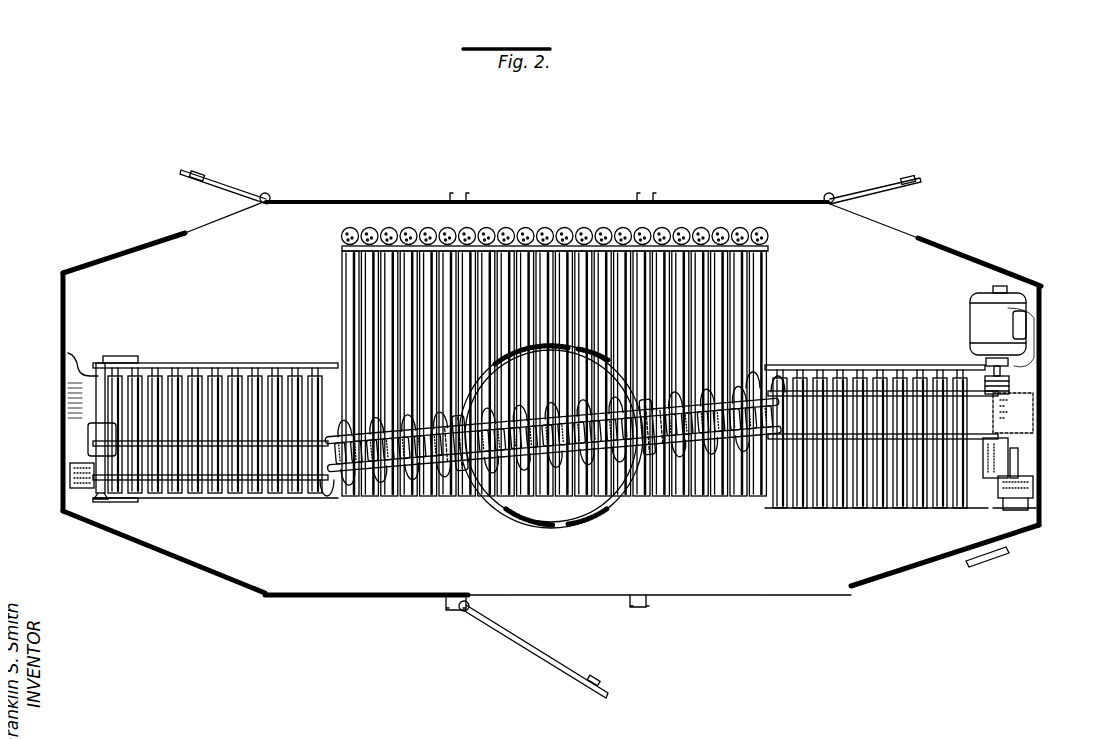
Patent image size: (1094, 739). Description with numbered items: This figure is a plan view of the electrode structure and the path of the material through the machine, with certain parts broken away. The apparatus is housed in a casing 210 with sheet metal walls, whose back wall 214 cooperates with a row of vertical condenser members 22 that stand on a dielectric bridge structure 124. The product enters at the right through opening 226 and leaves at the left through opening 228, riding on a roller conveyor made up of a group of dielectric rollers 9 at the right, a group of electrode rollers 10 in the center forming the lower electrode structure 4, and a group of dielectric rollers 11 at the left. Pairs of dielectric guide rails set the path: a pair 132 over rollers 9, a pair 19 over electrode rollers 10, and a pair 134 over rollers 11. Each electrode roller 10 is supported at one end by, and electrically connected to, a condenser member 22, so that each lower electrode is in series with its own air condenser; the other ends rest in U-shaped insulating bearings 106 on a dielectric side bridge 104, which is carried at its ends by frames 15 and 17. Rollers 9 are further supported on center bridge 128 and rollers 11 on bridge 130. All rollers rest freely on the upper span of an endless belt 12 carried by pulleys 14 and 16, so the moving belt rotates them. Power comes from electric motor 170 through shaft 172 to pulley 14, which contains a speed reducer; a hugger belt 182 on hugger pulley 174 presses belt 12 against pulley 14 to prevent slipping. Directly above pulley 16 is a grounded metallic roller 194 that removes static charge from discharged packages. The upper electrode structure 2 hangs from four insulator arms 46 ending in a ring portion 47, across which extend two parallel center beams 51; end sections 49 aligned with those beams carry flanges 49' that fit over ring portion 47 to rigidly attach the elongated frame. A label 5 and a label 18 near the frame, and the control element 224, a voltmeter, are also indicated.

The upper electrode structure 2 is at (658, 478).
The lower electrode structure 4 is at (325, 326).
The transfer conveyor 5 is at (537, 411).
The dielectric rollers 9 is at (820, 490).
The electrode rollers 10 is at (367, 274).
The dielectric rollers 11 is at (188, 363).
The endless belt 12 is at (986, 478).
The pulley 14 is at (1005, 493).
The frame 15 is at (1030, 366).
The pulley 16 is at (58, 490).
The frame 17 is at (60, 353).
The pins 18 is at (752, 376).
The guide rails 19 is at (320, 490).
The vertical condenser members 22 is at (478, 226).
The downwardly extending arms 46 is at (520, 514).
The ring portion 47 is at (622, 478).
The end sections 49 is at (557, 475).
The flanges 49' is at (441, 475).
The center beams 51 is at (492, 470).
The side bridge 104 is at (260, 492).
The bearing 106 is at (880, 492).
The dielectric bridge structure 124 is at (752, 240).
The center bridge 128 is at (808, 360).
The bridge 130 is at (222, 355).
The guide rails 132 is at (868, 382).
The guide rails 134 is at (191, 487).
The electric motor 170 is at (968, 304).
The shaft 172 is at (977, 366).
The hugger pulley 174 is at (1025, 497).
The hugger belt 182 is at (1015, 480).
The metallic roller 194 is at (90, 393).
The casing 210 is at (213, 577).
The back wall 214 is at (533, 193).
The voltmeter 224 is at (970, 556).
The opening 226 is at (1030, 412).
The opening 228 is at (62, 458).